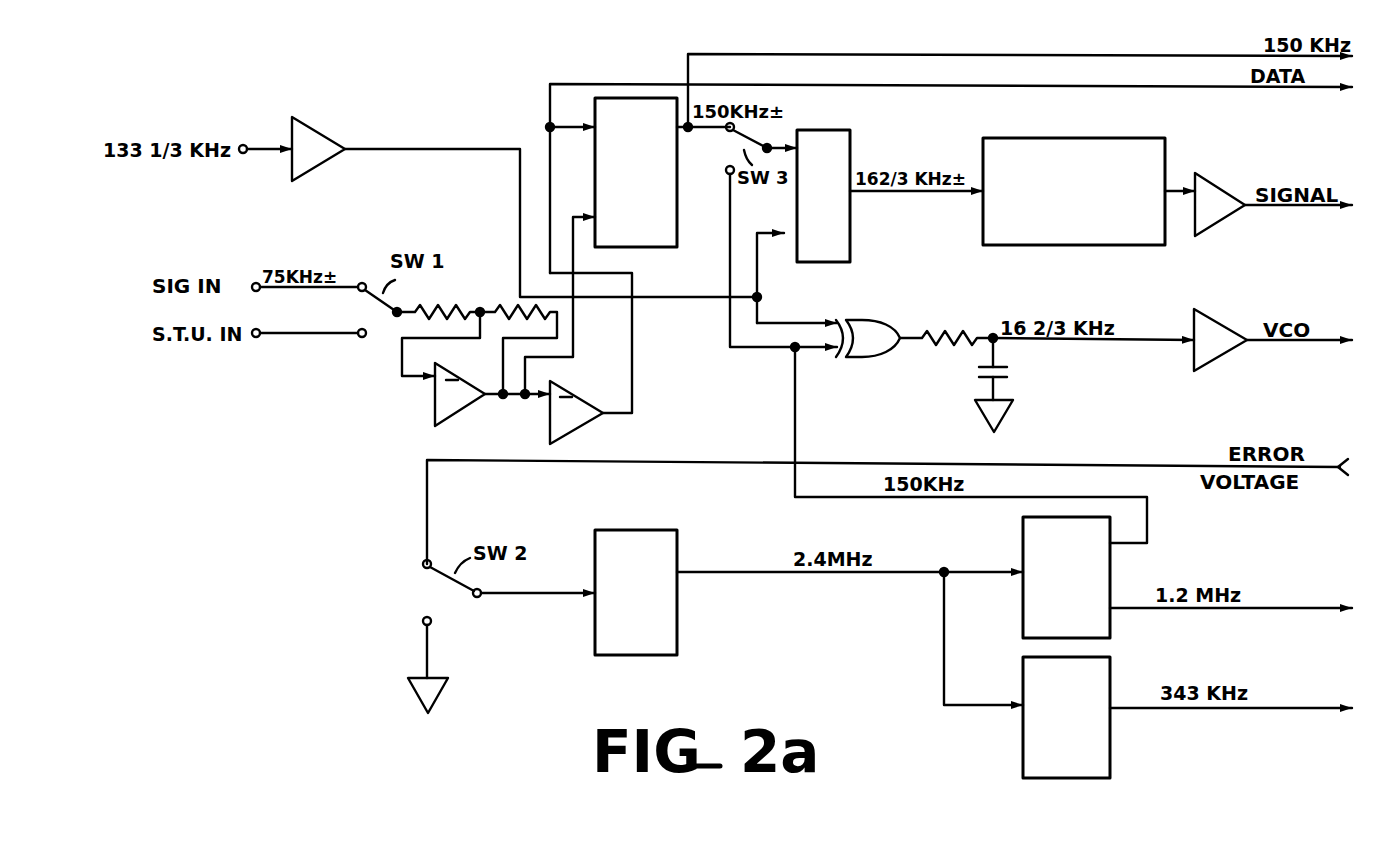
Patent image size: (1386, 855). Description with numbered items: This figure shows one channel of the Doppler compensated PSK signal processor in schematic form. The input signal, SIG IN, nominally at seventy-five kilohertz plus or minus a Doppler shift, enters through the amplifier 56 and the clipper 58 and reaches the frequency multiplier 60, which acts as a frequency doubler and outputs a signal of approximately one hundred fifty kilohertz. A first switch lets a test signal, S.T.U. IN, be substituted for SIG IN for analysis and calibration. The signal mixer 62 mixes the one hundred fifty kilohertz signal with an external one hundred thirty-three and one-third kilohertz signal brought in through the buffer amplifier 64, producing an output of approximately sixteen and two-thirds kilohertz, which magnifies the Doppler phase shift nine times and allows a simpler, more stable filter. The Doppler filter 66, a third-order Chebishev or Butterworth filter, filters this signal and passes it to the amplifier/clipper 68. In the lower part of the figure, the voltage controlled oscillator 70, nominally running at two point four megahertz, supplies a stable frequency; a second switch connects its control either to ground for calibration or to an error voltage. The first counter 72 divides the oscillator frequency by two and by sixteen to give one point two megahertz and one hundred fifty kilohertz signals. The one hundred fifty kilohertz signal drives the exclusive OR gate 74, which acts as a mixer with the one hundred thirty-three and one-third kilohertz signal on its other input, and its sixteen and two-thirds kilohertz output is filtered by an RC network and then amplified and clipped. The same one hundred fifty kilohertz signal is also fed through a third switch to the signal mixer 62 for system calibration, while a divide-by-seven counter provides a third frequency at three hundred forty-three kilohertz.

The amplifier 56 is at (460, 407).
The clipper 58 is at (583, 427).
The frequency multiplier 60 is at (663, 247).
The signal mixer 62 is at (837, 128).
The buffer amplifier 64 is at (320, 130).
The Doppler filter 66 is at (1067, 138).
The amplifier/clipper 68 is at (1217, 182).
The voltage controlled oscillator 70 is at (666, 530).
The first counter 72 is at (1022, 538).
The exclusive OR gate 74 is at (880, 320).